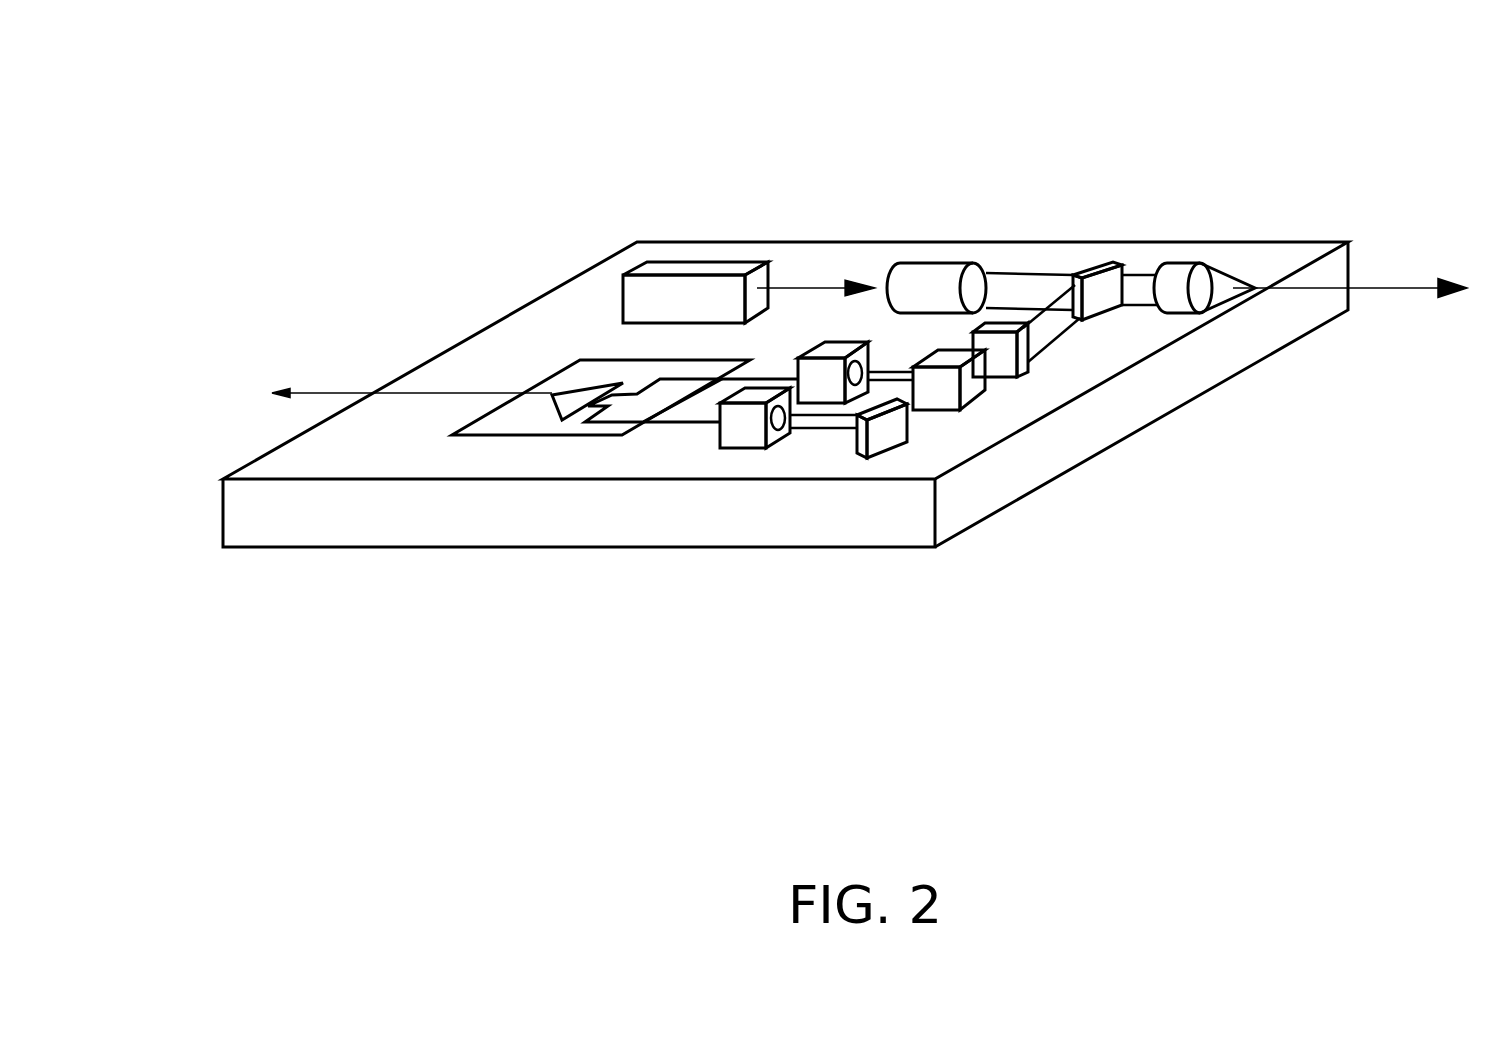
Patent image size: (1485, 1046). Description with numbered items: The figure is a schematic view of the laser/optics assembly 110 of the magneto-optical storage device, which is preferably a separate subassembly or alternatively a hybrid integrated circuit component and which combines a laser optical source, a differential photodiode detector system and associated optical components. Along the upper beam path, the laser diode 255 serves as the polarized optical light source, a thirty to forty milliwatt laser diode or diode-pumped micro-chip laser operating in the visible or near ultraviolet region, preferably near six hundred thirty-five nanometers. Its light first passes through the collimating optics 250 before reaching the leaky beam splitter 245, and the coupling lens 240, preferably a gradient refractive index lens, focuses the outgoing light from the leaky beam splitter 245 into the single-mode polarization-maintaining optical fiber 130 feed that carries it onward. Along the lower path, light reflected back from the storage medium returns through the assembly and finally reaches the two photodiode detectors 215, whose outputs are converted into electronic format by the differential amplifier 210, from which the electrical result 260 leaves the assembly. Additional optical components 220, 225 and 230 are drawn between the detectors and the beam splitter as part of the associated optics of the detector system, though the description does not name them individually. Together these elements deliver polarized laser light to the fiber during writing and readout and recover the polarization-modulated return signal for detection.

The laser/optics assembly 110 is at (237, 117).
The single-mode polarization-maintaining optical fiber 130 is at (1410, 302).
The differential amplifier 210 is at (558, 427).
The photodiode detectors 215 is at (841, 524).
The optical filter plate 220 is at (997, 493).
The optical element 225 is at (1055, 439).
The beam splitter 230 is at (1113, 411).
The coupling lens 240 is at (1200, 260).
The leaky beam splitter 245 is at (1201, 207).
The collimating optics 250 is at (987, 255).
The laser diode 255 is at (723, 258).
The output signal 260 is at (390, 376).